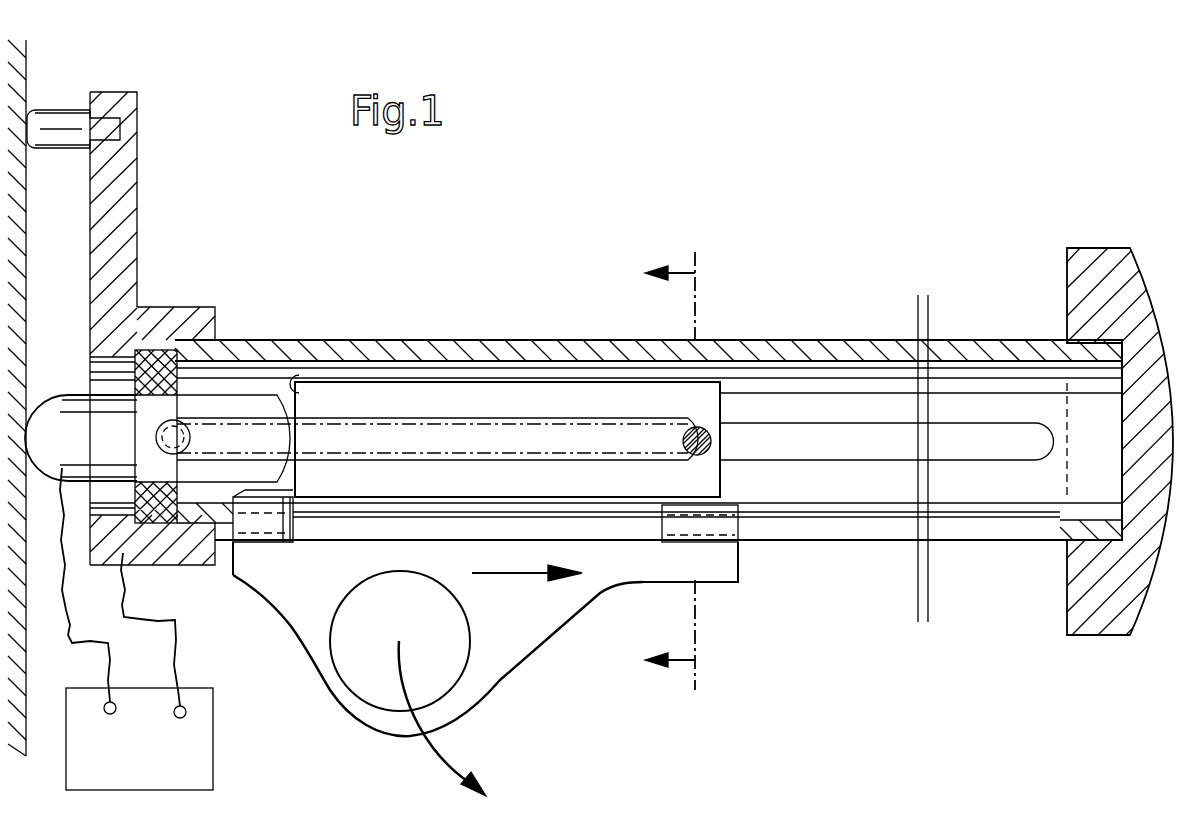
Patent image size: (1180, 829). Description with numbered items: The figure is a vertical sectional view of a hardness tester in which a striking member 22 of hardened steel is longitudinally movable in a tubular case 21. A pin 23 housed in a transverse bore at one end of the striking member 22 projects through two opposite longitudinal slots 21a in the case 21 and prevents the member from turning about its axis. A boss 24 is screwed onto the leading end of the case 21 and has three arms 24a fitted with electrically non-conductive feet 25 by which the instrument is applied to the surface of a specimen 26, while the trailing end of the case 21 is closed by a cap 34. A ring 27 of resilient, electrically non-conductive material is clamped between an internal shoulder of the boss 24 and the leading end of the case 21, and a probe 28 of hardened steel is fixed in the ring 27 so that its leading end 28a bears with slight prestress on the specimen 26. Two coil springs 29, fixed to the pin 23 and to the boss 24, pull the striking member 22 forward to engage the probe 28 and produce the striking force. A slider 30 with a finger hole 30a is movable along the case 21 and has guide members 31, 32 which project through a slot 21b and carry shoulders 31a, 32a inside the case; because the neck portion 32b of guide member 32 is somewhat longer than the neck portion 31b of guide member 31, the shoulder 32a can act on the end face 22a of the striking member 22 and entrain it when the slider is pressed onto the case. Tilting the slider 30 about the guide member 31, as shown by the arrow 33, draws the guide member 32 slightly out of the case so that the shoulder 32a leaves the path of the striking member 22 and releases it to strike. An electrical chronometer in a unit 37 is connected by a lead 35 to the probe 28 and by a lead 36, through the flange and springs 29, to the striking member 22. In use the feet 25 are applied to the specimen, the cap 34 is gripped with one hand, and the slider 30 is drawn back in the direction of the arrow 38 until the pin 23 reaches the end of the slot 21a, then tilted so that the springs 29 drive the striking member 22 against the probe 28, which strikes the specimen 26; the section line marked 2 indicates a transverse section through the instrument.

The section line II-II 2 is at (664, 477).
The tubular case 21 is at (390, 345).
The longitudinal slots 21a is at (835, 428).
The slot 21b is at (866, 520).
The striking member 22 is at (523, 398).
The end face 22a is at (293, 380).
The pin 23 is at (700, 428).
The boss 24 is at (181, 318).
The arms 24a is at (118, 191).
The feet 25 is at (54, 131).
The specimen 26 is at (27, 72).
The ring 27 is at (153, 348).
The probe 28 is at (250, 408).
The leading end 28a is at (30, 408).
The coil springs 29 is at (463, 415).
The slider 30 is at (490, 655).
The finger hole 30a is at (365, 670).
The guide member 31 is at (742, 566).
The shoulder 31a is at (720, 510).
The neck portion 31b is at (748, 530).
The guide member 32 is at (228, 545).
The shoulder 32a is at (284, 517).
The neck portion 32b is at (257, 520).
The arrow 33 is at (458, 718).
The cap 34 is at (1080, 303).
The lead 35 is at (72, 626).
The lead 36 is at (177, 641).
The unit 37 is at (200, 733).
The arrow 38 is at (530, 600).